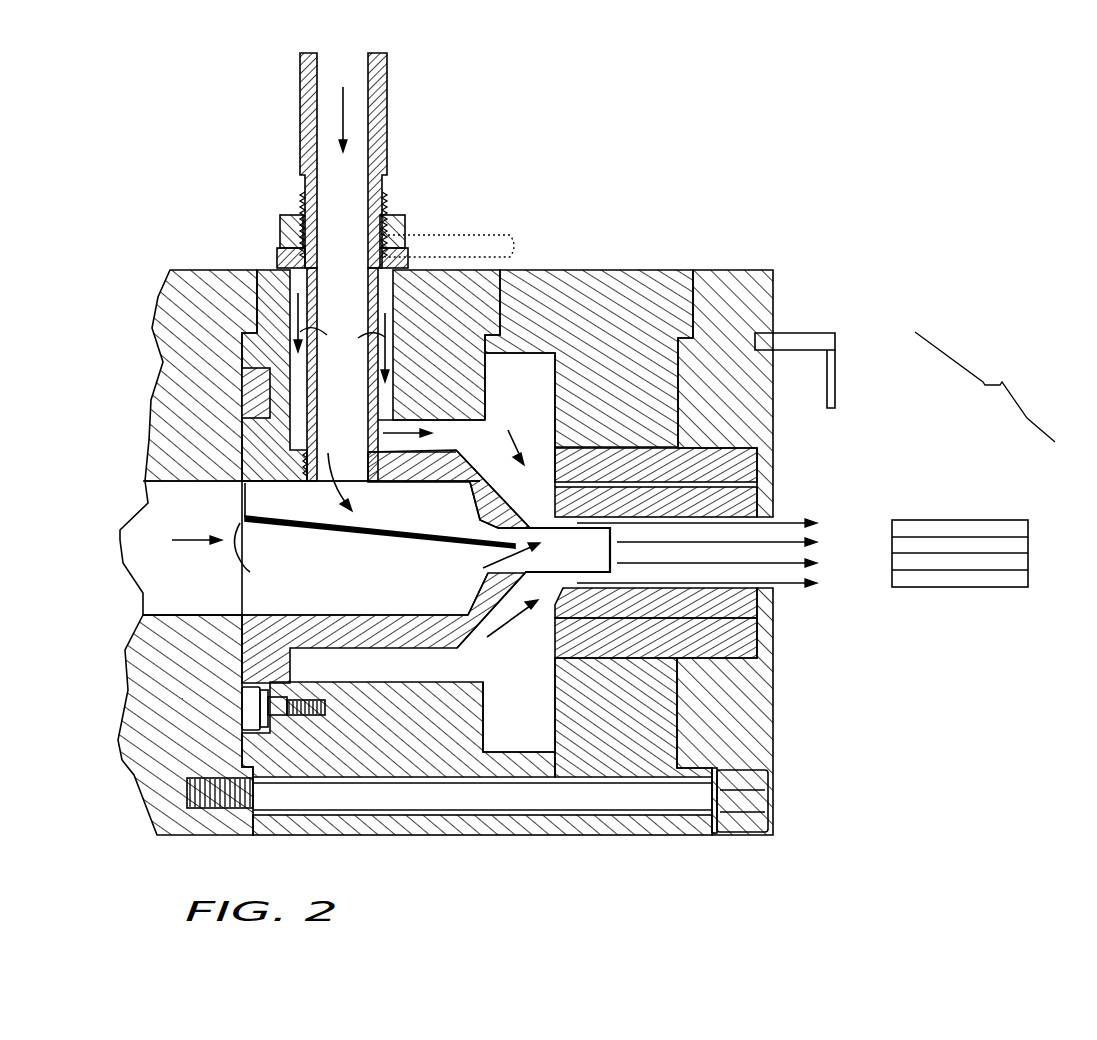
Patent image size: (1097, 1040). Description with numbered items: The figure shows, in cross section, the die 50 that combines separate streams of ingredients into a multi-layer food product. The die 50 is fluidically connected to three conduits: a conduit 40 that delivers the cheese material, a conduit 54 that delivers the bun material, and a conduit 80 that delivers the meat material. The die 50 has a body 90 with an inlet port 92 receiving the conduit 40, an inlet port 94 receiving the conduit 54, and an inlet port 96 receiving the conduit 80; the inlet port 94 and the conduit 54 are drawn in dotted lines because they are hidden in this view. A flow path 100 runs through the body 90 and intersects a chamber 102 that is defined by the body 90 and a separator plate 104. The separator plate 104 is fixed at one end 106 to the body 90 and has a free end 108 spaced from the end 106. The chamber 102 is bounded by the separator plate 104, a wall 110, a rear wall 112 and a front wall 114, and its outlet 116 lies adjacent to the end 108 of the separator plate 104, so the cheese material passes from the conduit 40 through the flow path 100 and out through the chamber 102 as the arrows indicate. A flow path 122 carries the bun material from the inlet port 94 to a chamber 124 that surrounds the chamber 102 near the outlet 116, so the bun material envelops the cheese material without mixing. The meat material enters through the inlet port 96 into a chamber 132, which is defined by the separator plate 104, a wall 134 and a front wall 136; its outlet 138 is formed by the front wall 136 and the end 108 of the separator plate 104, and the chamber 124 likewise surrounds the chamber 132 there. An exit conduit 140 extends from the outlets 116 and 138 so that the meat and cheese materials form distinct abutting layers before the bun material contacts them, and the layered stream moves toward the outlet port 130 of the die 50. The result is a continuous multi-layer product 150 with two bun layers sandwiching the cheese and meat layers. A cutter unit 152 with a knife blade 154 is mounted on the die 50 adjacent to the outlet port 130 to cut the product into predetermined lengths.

The conduit 40 is at (300, 130).
The die 50 is at (664, 214).
The conduit 54 is at (443, 233).
The conduit 80 is at (145, 503).
The body 90 is at (613, 836).
The inlet port 92 is at (300, 175).
The inlet port 94 is at (388, 263).
The inlet port 96 is at (240, 607).
The flow path 100 is at (378, 390).
The chamber 102 is at (265, 512).
The separator plate 104 is at (323, 532).
The end of separator plate 106 is at (242, 565).
The end of separator plate 108 is at (530, 522).
The wall 110 is at (397, 537).
The rear wall 112 is at (240, 500).
The front wall 114 is at (477, 490).
The outlet 116 is at (500, 530).
The flow path 122 is at (378, 298).
The chamber 124 is at (498, 401).
The outlet port 130 is at (777, 590).
The chamber 132 is at (308, 611).
The wall 134 is at (447, 613).
The front wall 136 is at (477, 582).
The outlet 138 is at (540, 567).
The exit conduit 140 is at (568, 502).
The multi-layer product 150 is at (938, 520).
The cutter unit 152 is at (805, 332).
The knife blade 154 is at (835, 358).